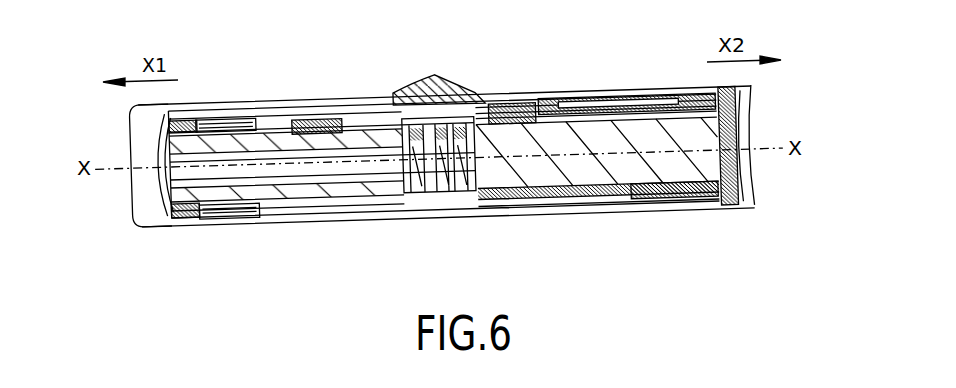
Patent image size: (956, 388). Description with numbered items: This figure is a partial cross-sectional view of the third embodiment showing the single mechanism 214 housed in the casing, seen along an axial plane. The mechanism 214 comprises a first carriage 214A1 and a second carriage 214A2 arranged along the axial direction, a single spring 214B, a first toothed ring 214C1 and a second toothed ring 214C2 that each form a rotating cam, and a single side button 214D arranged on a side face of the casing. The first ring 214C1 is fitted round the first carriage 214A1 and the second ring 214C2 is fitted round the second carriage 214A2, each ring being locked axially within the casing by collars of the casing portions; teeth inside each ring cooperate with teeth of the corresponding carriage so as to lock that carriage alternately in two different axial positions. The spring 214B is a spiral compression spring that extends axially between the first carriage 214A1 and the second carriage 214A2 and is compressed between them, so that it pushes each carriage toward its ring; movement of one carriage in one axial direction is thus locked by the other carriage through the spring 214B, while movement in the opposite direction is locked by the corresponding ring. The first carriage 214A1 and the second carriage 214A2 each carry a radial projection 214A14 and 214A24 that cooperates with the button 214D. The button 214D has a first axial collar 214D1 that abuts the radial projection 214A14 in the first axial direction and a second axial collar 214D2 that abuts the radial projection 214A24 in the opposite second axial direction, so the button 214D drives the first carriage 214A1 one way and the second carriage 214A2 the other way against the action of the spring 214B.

The single mechanism 214 is at (393, 86).
The first carriage 214A1 is at (562, 175).
The second carriage 214A2 is at (315, 197).
The radial projection 214A14 is at (487, 100).
The radial projection 214A24 is at (348, 103).
The single spring 214B is at (460, 182).
The first toothed ring forming a rotating cam 214C1 is at (664, 193).
The second toothed ring forming a rotating cam 214C2 is at (207, 217).
The single side button 214D is at (395, 97).
The first axial collar 214D1 is at (553, 115).
The second axial collar 214D2 is at (287, 105).